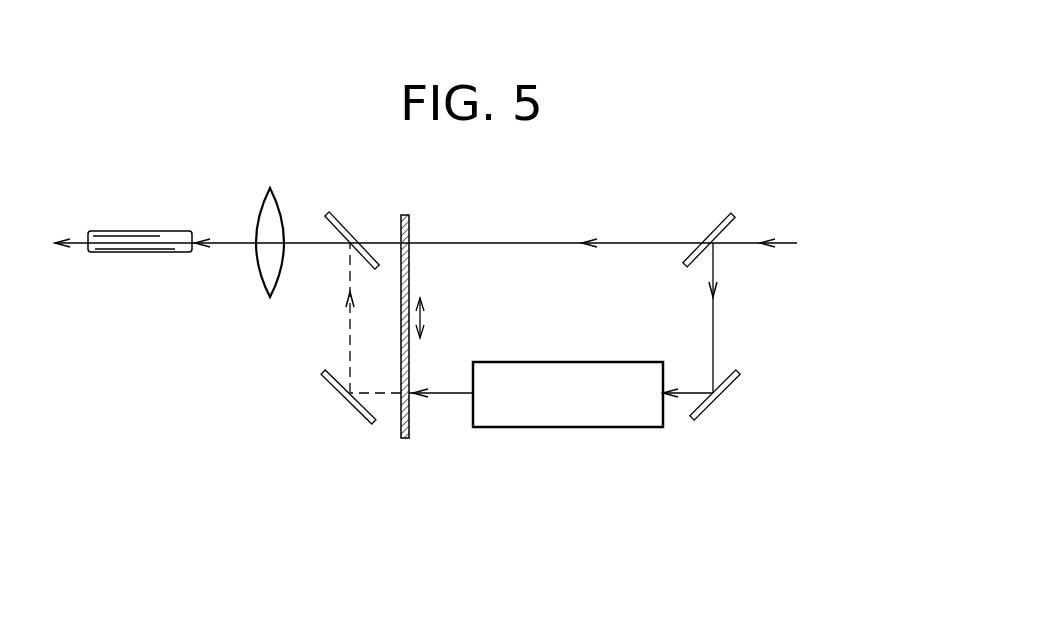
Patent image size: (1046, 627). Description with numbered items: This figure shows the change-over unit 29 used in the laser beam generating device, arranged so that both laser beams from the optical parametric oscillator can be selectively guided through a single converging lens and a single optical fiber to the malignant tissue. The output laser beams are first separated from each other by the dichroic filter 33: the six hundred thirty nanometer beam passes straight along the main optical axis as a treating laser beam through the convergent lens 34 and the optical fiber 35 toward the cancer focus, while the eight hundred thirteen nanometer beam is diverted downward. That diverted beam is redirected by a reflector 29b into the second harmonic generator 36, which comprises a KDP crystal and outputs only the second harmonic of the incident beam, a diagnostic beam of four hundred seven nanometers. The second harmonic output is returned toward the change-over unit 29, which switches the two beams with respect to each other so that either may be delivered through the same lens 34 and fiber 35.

The change-over unit 29 is at (405, 432).
The reflector 29b is at (718, 395).
The dichroic filter 33 is at (732, 215).
The convergent lens 34 is at (277, 230).
The optical fiber 35 is at (127, 253).
The second harmonic generator 36 is at (567, 362).